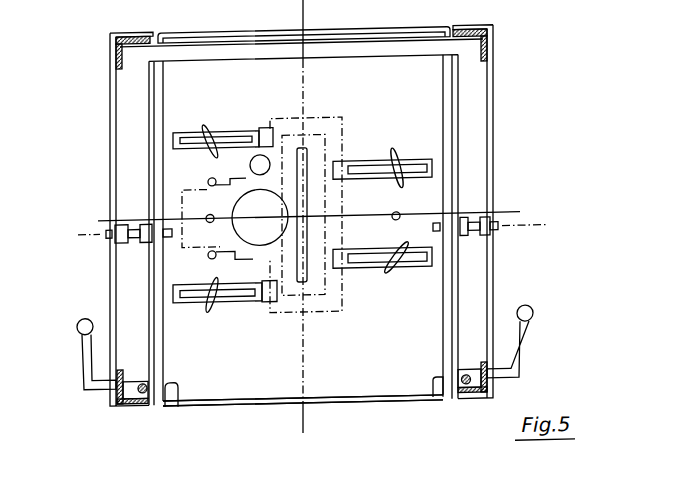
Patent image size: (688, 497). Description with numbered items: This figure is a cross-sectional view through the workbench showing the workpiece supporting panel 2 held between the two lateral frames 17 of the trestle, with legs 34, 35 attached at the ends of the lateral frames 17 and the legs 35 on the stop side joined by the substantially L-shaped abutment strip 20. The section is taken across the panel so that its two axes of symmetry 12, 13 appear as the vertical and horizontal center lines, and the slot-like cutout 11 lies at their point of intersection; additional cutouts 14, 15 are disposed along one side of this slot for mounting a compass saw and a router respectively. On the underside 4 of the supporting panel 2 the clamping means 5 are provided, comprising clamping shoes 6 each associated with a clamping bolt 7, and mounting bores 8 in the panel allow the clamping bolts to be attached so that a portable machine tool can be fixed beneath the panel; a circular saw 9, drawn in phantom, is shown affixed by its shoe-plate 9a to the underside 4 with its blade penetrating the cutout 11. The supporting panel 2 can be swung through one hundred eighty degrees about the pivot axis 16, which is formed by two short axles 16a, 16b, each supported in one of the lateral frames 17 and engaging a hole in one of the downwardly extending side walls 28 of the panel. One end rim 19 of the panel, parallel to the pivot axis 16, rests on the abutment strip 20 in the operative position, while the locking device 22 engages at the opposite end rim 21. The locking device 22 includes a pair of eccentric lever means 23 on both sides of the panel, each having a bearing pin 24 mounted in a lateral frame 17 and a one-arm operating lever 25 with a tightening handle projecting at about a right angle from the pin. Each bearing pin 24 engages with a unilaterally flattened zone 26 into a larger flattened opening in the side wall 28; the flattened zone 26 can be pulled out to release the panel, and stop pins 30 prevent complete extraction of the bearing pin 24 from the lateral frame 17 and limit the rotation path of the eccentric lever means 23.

The workpiece supporting panel 2 is at (242, 407).
The underside 4 is at (367, 384).
The clamping means 5 is at (418, 149).
The clamping shoe 6 is at (235, 297).
The clamping bolt 7 is at (209, 308).
The mounting bore 8 is at (207, 176).
The circular saw 9 is at (332, 116).
The shoe-plate 9a is at (338, 133).
The slot-like cutout 11 is at (306, 258).
The axis of symmetry 12 is at (304, 414).
The axis of symmetry 13 is at (507, 217).
The cutout 14 is at (258, 127).
The cutout 15 is at (259, 245).
The pivot axis 16 is at (100, 231).
The short axle 16a is at (133, 239).
The short axle 16b is at (472, 239).
The lateral frame 17 is at (133, 136).
The end rim 19 is at (280, 406).
The abutment strip 20 is at (335, 53).
The end rim 21 is at (245, 64).
The locking device 22 is at (539, 374).
The eccentric lever means 23 is at (86, 359).
The bearing pin 24 is at (128, 395).
The one-arm operating lever 25 is at (78, 338).
The unilaterally flattened zone 26 is at (178, 390).
The side wall 28 is at (165, 105).
The stop pin 30 is at (147, 397).
The leg 34 is at (115, 403).
The leg 35 is at (120, 36).